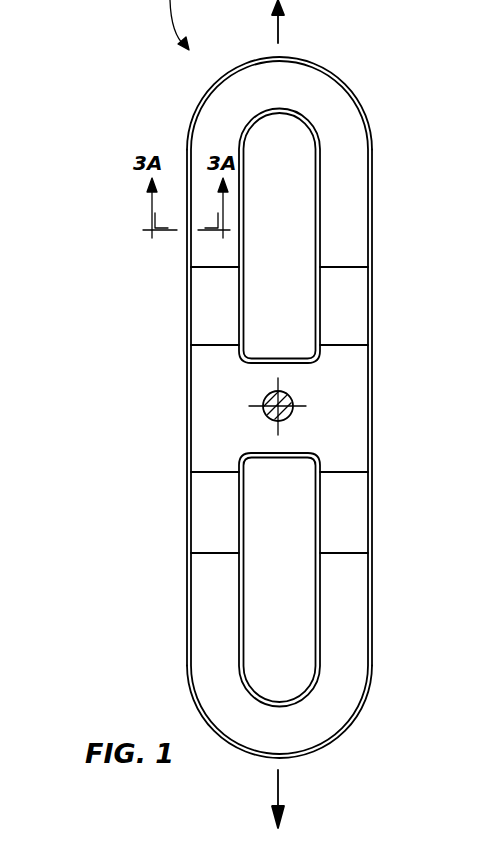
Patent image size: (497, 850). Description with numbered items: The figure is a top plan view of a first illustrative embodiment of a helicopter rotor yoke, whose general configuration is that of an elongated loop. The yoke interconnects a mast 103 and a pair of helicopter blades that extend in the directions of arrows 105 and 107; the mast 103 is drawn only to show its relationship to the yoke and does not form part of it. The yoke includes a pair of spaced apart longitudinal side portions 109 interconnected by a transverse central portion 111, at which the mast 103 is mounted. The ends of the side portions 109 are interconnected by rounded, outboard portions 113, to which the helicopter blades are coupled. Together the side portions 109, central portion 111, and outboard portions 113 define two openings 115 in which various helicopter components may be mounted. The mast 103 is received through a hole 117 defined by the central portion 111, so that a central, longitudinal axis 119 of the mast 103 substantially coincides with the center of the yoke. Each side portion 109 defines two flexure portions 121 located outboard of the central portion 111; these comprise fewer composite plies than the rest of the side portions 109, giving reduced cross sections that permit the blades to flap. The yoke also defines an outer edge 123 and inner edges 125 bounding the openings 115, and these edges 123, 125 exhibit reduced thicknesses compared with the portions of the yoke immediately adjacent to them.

The mast 103 is at (294, 415).
The arrow 105 is at (280, 30).
The arrow 107 is at (279, 790).
The longitudinal side portion 109 is at (357, 232).
The transverse central portion 111 is at (210, 451).
The rounded outboard portion 113 is at (272, 90).
The opening 115 is at (277, 346).
The hole 117 is at (263, 413).
The central longitudinal axis 119 is at (283, 387).
The flexure portion 121 is at (217, 298).
The outer edge 123 is at (371, 150).
The inner edge 125 is at (317, 186).